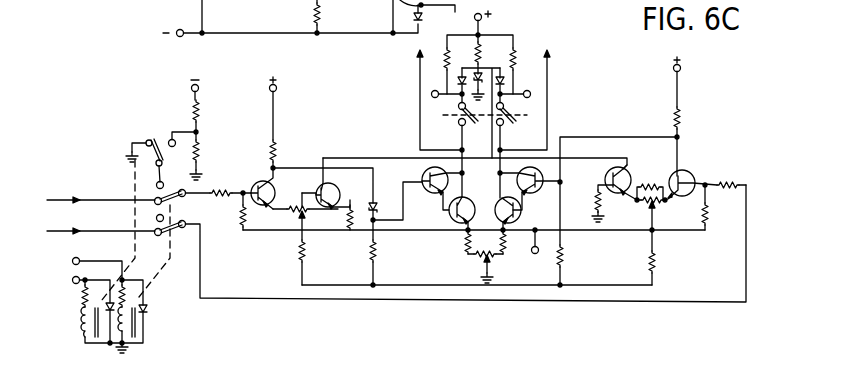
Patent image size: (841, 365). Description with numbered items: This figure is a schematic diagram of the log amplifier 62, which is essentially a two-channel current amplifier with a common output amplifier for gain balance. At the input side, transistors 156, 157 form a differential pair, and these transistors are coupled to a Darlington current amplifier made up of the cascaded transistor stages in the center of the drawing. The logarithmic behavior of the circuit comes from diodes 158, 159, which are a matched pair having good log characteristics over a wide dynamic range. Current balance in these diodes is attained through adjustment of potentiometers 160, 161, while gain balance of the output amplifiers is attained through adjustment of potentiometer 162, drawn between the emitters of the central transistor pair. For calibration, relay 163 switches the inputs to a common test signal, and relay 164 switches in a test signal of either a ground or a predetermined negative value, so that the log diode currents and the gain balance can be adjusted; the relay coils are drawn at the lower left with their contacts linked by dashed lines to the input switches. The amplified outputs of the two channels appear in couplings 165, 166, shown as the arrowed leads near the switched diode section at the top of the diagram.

The log amplifier 62 is at (116, 153).
The transistor 156 is at (260, 183).
The transistor 157 is at (334, 212).
The diode 158 is at (460, 82).
The diode 159 is at (502, 80).
The potentiometer 160 is at (315, 183).
The potentiometer 161 is at (647, 203).
The potentiometer 162 is at (480, 258).
The relay 163 is at (125, 325).
The relay 164 is at (82, 325).
The coupling 165 is at (417, 103).
The coupling 166 is at (551, 72).